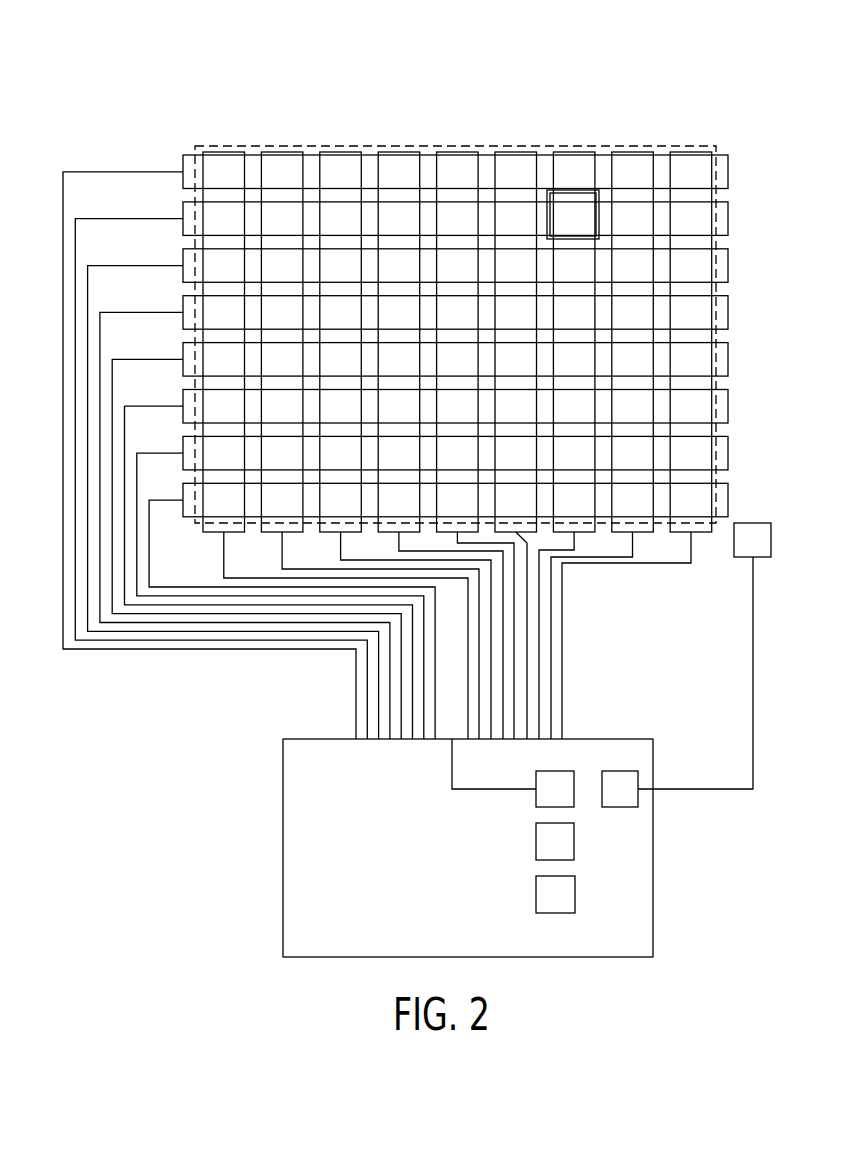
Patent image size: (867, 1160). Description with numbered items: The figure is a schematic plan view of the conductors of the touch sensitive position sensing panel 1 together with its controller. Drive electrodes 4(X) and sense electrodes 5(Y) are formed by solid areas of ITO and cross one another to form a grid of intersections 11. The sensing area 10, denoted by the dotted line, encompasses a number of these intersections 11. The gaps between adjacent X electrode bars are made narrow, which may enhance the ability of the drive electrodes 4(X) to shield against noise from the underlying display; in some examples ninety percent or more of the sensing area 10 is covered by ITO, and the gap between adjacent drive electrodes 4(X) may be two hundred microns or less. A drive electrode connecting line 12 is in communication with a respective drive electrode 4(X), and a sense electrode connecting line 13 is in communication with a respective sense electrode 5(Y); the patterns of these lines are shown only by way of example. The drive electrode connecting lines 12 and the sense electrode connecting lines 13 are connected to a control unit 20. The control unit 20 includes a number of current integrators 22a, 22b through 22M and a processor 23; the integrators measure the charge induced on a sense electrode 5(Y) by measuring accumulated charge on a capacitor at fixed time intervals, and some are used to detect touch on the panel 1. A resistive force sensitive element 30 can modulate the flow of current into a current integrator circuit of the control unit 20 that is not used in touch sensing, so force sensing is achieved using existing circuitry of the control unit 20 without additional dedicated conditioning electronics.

The position sensing panel 1 is at (234, 63).
The sensing area 10 is at (195, 147).
The drive electrodes 4 is at (183, 212).
The sense electrodes 5 is at (210, 307).
The intersections 11 is at (599, 219).
The drive electrode connecting line 12 is at (87, 172).
The sense electrode connecting line 13 is at (563, 657).
The control unit 20 is at (283, 853).
The current integrator 22a is at (569, 800).
The current integrator 22b is at (569, 852).
The current integrator 22M is at (571, 905).
The processor 23 is at (630, 800).
The resistive force sensitive element 30 is at (763, 551).